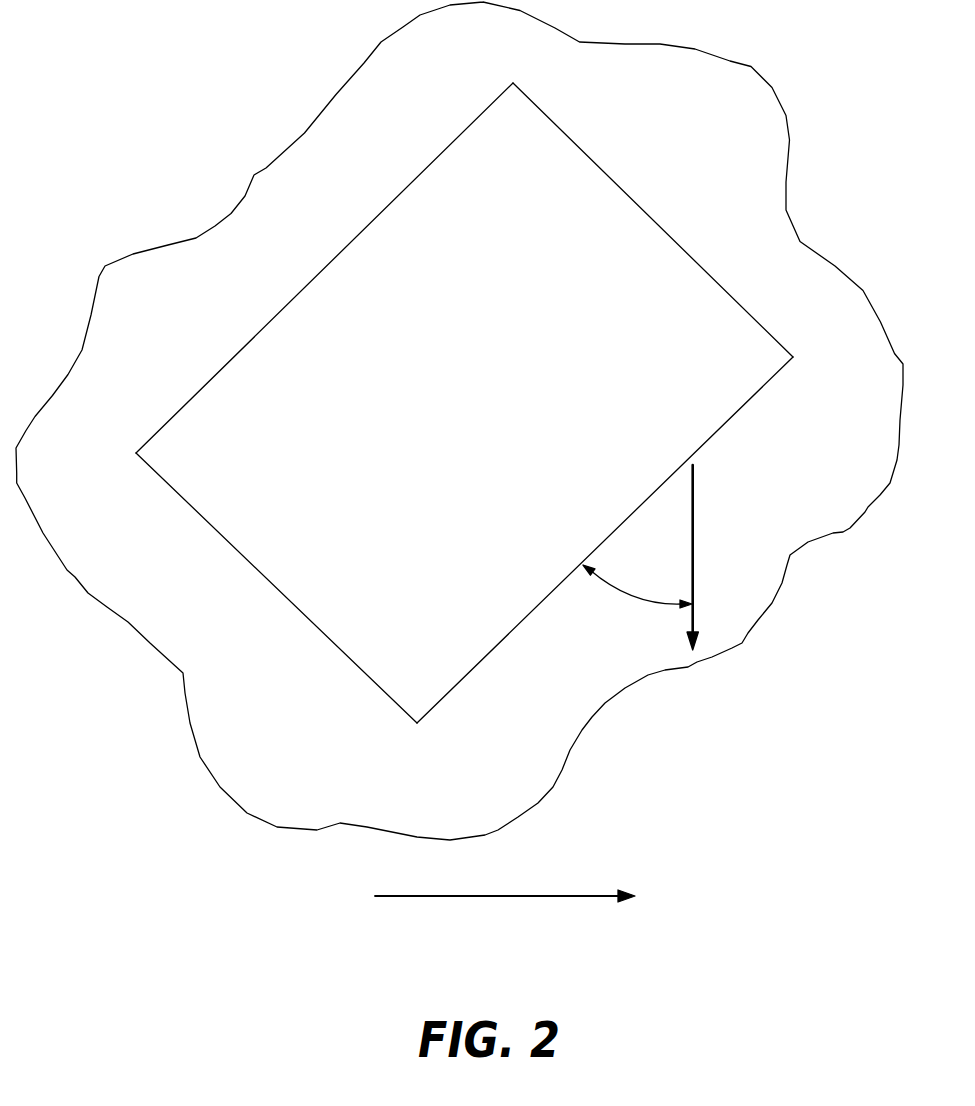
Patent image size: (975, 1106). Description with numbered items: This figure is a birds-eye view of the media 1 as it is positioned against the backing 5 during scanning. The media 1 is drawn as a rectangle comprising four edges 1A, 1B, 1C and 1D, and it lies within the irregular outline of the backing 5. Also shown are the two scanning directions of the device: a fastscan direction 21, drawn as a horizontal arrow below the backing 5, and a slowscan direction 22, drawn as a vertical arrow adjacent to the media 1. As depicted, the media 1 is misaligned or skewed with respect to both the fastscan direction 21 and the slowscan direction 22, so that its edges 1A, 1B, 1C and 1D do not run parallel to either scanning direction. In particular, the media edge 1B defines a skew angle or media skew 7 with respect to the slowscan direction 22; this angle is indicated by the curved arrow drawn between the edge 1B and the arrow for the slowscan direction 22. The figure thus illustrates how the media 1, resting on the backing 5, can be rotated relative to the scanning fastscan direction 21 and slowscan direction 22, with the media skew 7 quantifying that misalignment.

The media 1 is at (464, 362).
The media edge 1A is at (638, 207).
The media edge 1B is at (534, 608).
The media edge 1C is at (255, 567).
The media edge 1D is at (322, 272).
The backing 5 is at (738, 95).
The skew angle 7 is at (627, 593).
The fastscan direction 21 is at (502, 897).
The slowscan direction 22 is at (695, 547).